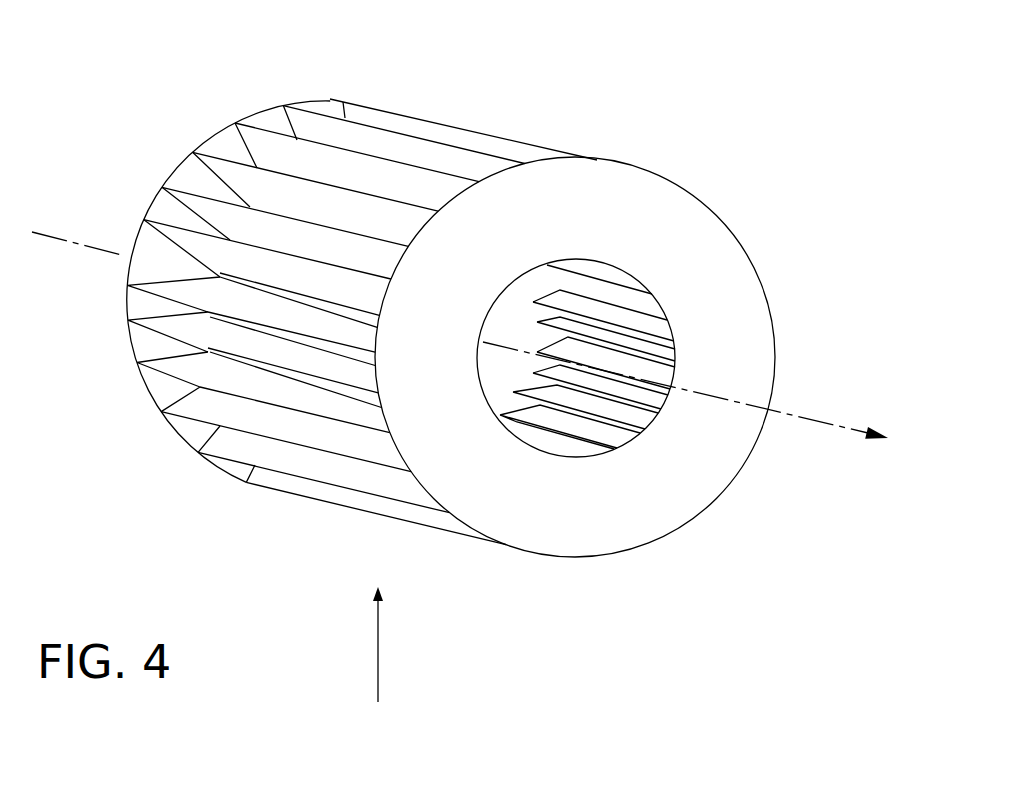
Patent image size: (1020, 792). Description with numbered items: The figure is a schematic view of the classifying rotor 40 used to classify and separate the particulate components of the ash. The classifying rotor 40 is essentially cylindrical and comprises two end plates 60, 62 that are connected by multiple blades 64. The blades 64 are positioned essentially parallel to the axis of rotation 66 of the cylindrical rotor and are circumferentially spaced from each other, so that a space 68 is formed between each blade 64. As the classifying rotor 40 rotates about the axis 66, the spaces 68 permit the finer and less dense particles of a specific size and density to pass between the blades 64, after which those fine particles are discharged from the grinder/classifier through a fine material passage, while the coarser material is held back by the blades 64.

The classifying rotor 40 is at (400, 103).
The end plate 60 is at (632, 195).
The end plate 62 is at (205, 137).
The blades 64 is at (445, 157).
The axis of rotation 66 is at (102, 250).
The space 68 is at (223, 317).